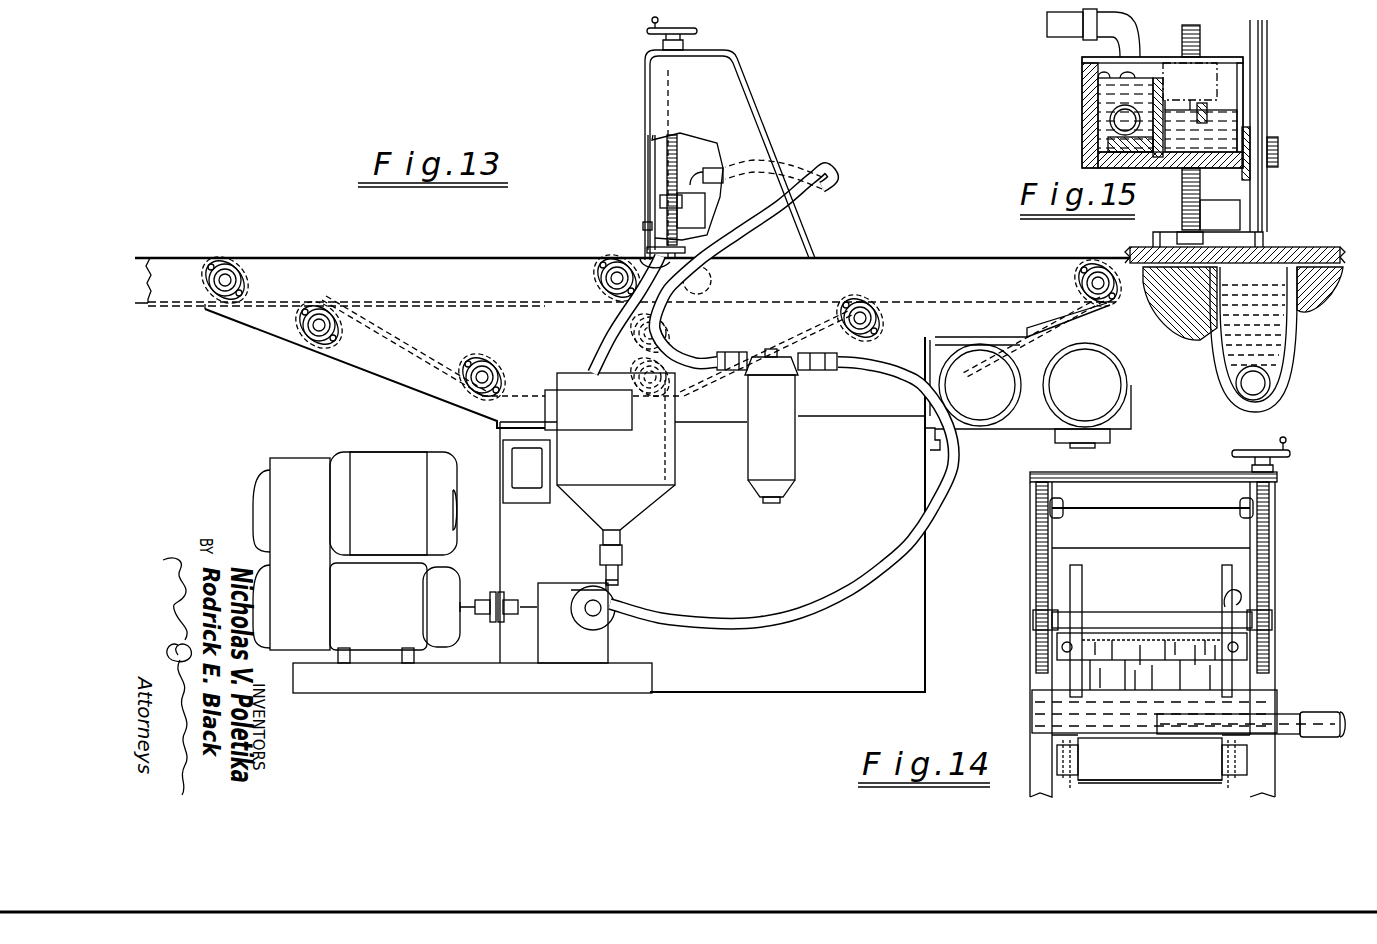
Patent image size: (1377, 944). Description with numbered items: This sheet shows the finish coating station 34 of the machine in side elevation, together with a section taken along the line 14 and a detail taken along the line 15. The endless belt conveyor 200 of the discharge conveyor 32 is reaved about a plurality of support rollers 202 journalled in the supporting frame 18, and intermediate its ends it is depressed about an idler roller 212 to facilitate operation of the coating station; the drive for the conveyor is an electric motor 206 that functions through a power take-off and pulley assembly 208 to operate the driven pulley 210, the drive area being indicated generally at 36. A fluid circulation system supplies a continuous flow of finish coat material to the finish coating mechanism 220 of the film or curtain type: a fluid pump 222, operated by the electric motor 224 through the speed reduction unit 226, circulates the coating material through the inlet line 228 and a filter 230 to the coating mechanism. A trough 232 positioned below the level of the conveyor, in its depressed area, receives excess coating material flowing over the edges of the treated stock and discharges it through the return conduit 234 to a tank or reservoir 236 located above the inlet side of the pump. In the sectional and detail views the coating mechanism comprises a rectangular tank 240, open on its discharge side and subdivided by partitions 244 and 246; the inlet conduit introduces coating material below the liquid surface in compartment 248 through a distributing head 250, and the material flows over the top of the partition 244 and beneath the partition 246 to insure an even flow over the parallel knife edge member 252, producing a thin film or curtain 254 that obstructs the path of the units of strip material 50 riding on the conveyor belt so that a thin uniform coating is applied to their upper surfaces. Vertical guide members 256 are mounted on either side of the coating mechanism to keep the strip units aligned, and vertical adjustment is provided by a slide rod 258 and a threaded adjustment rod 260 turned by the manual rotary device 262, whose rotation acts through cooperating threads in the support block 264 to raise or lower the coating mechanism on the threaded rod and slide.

In FIG. 13, the section line 14— 14 is at (651, 33).
In FIG. 14, the section line 15— 15 is at (1160, 605).
In FIG. 13, the supporting frame 18 is at (930, 636).
In FIG. 14, the supporting frame 18 is at (1026, 783).
In FIG. 13, the discharge conveyor 32 is at (172, 197).
In FIG. 13, the finish coating station 34 is at (587, 108).
In FIG. 13, the drive assembly 36 is at (1000, 237).
In FIG. 15, the units of strip material 50 is at (1270, 255).
In FIG. 13, the endless belt conveyor 200 is at (420, 370).
In FIG. 14, the endless belt conveyor 200 is at (1135, 783).
In FIG. 15, the endless belt conveyor 200 is at (1206, 340).
In FIG. 13, the support rollers 202 is at (246, 272).
In FIG. 13, the electric motor 206 is at (1028, 440).
In FIG. 13, the power take-off and pulley assembly 208 is at (1082, 333).
In FIG. 13, the driven pulley 210 is at (1085, 276).
In FIG. 13, the idler roller 212 is at (672, 328).
In FIG. 14, the idler roller 212 is at (1138, 763).
In FIG. 13, the finish coating mechanism 220 is at (640, 186).
In FIG. 15, the finish coating mechanism 220 is at (1065, 107).
In FIG. 13, the fluid pump 222 is at (617, 597).
In FIG. 13, the electric motor 224 is at (437, 530).
In FIG. 13, the speed reduction unit 226 is at (443, 582).
In FIG. 13, the inlet line 228 is at (812, 160).
In FIG. 15, the inlet line 228 is at (1073, 35).
In FIG. 13, the filter 230 is at (800, 455).
In FIG. 13, the trough 232 is at (653, 263).
In FIG. 14, the trough 232 is at (1033, 712).
In FIG. 15, the trough 232 is at (1275, 345).
In FIG. 13, the return conduit 234 is at (617, 325).
In FIG. 14, the return conduit 234 is at (1282, 713).
In FIG. 15, the return conduit 234 is at (1238, 390).
In FIG. 13, the tank or reservoir 236 is at (648, 455).
In FIG. 15, the rectangular tank 240 is at (1086, 132).
In FIG. 14, the partition 244 is at (1198, 603).
In FIG. 15, the partition 244 is at (1172, 138).
In FIG. 14, the partition 246 is at (1127, 635).
In FIG. 15, the partition 246 is at (1207, 118).
In FIG. 15, the compartment 248 is at (1113, 100).
In FIG. 15, the distributing head 250 is at (1110, 143).
In FIG. 14, the parallel knife edge member 252 is at (1157, 658).
In FIG. 15, the parallel knife edge member 252 is at (1243, 168).
In FIG. 14, the thin film or curtain 254 is at (1098, 668).
In FIG. 15, the thin film or curtain 254 is at (1180, 235).
In FIG. 14, the vertical guide members 256 is at (1082, 578).
In FIG. 15, the vertical guide members 256 is at (1258, 40).
In FIG. 14, the slide rod 258 is at (1050, 565).
In FIG. 13, the threaded adjustment rod 260 is at (666, 162).
In FIG. 14, the threaded adjustment rod 260 is at (1262, 570).
In FIG. 15, the threaded adjustment rod 260 is at (1200, 50).
In FIG. 13, the manual rotary device 262 is at (700, 31).
In FIG. 14, the manual rotary device 262 is at (1235, 452).
In FIG. 13, the support block 264 is at (660, 202).
In FIG. 14, the support block 264 is at (1262, 622).
In FIG. 15, the support block 264 is at (1243, 75).